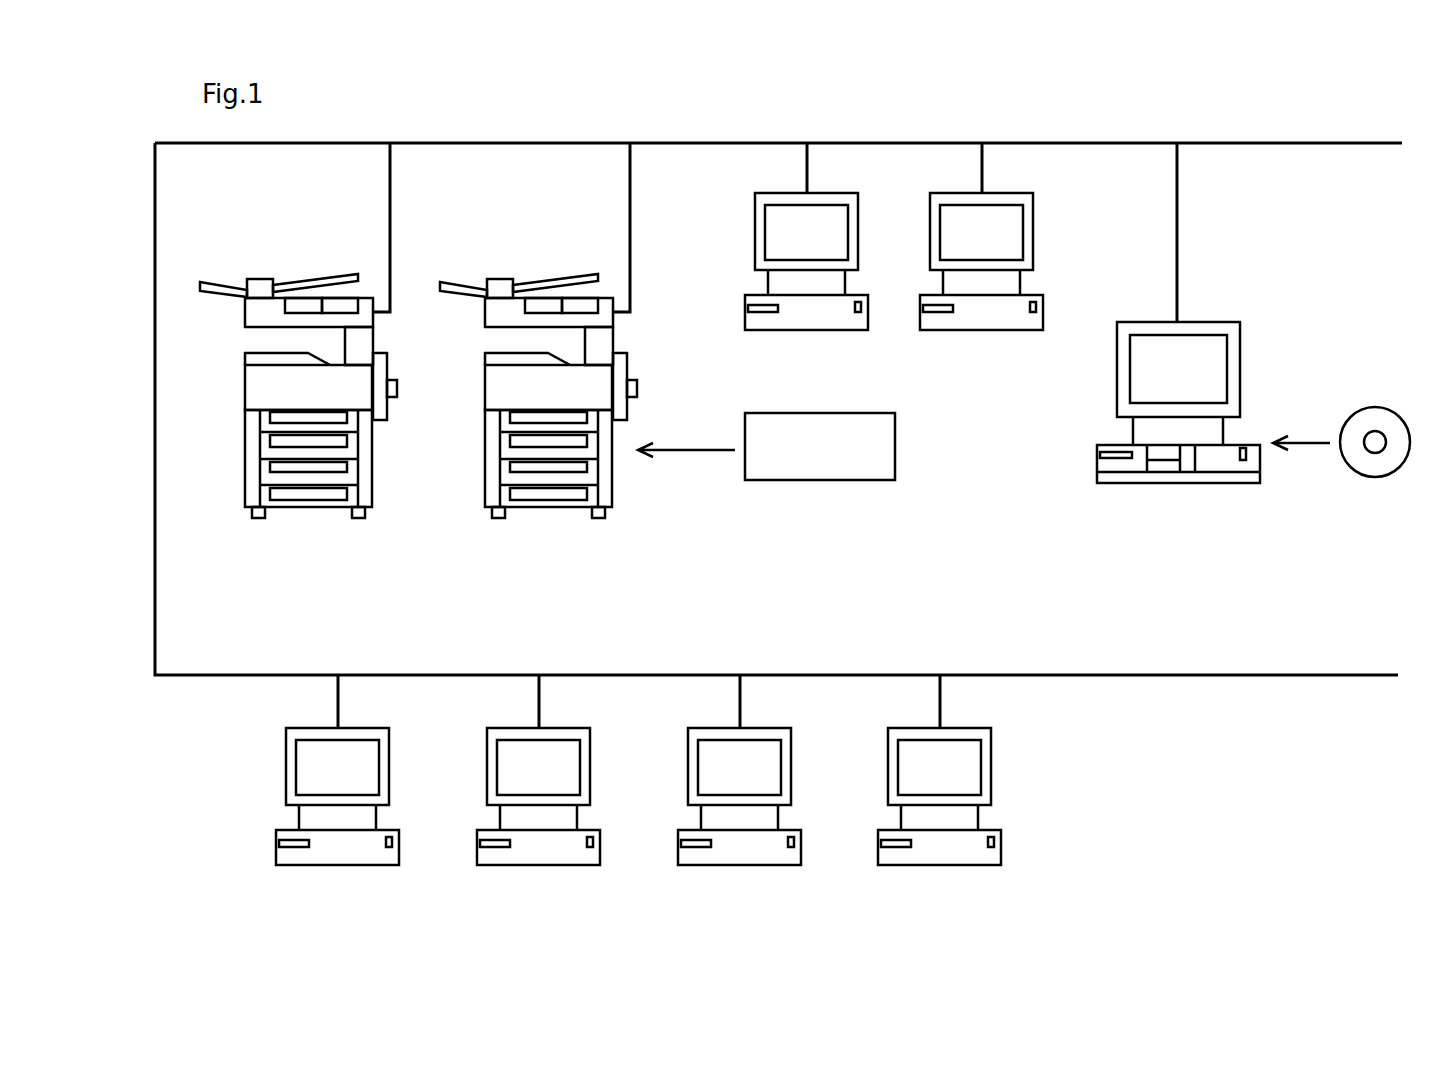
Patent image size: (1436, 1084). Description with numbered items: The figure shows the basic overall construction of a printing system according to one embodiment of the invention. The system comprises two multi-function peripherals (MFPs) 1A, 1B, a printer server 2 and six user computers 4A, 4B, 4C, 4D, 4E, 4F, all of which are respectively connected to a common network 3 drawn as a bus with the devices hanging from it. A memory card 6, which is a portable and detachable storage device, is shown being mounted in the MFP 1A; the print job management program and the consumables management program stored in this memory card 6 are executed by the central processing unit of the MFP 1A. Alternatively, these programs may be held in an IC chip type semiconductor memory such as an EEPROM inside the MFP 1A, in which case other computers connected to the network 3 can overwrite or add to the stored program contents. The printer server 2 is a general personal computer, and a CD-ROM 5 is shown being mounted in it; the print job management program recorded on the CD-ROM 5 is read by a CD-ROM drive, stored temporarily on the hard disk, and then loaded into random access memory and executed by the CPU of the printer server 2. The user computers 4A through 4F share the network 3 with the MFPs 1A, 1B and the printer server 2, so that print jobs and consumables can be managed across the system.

The multi-function peripheral 1A is at (267, 279).
The multi-function peripheral 1B is at (507, 279).
The printer server 2 is at (1240, 483).
The network 3 is at (1085, 140).
The user computer 4A is at (807, 330).
The user computer 4B is at (982, 330).
The user computer 4C is at (338, 865).
The user computer 4D is at (539, 865).
The user computer 4E is at (740, 865).
The user computer 4F is at (940, 865).
The CD-ROM 5 is at (1368, 407).
The memory card 6 is at (815, 480).